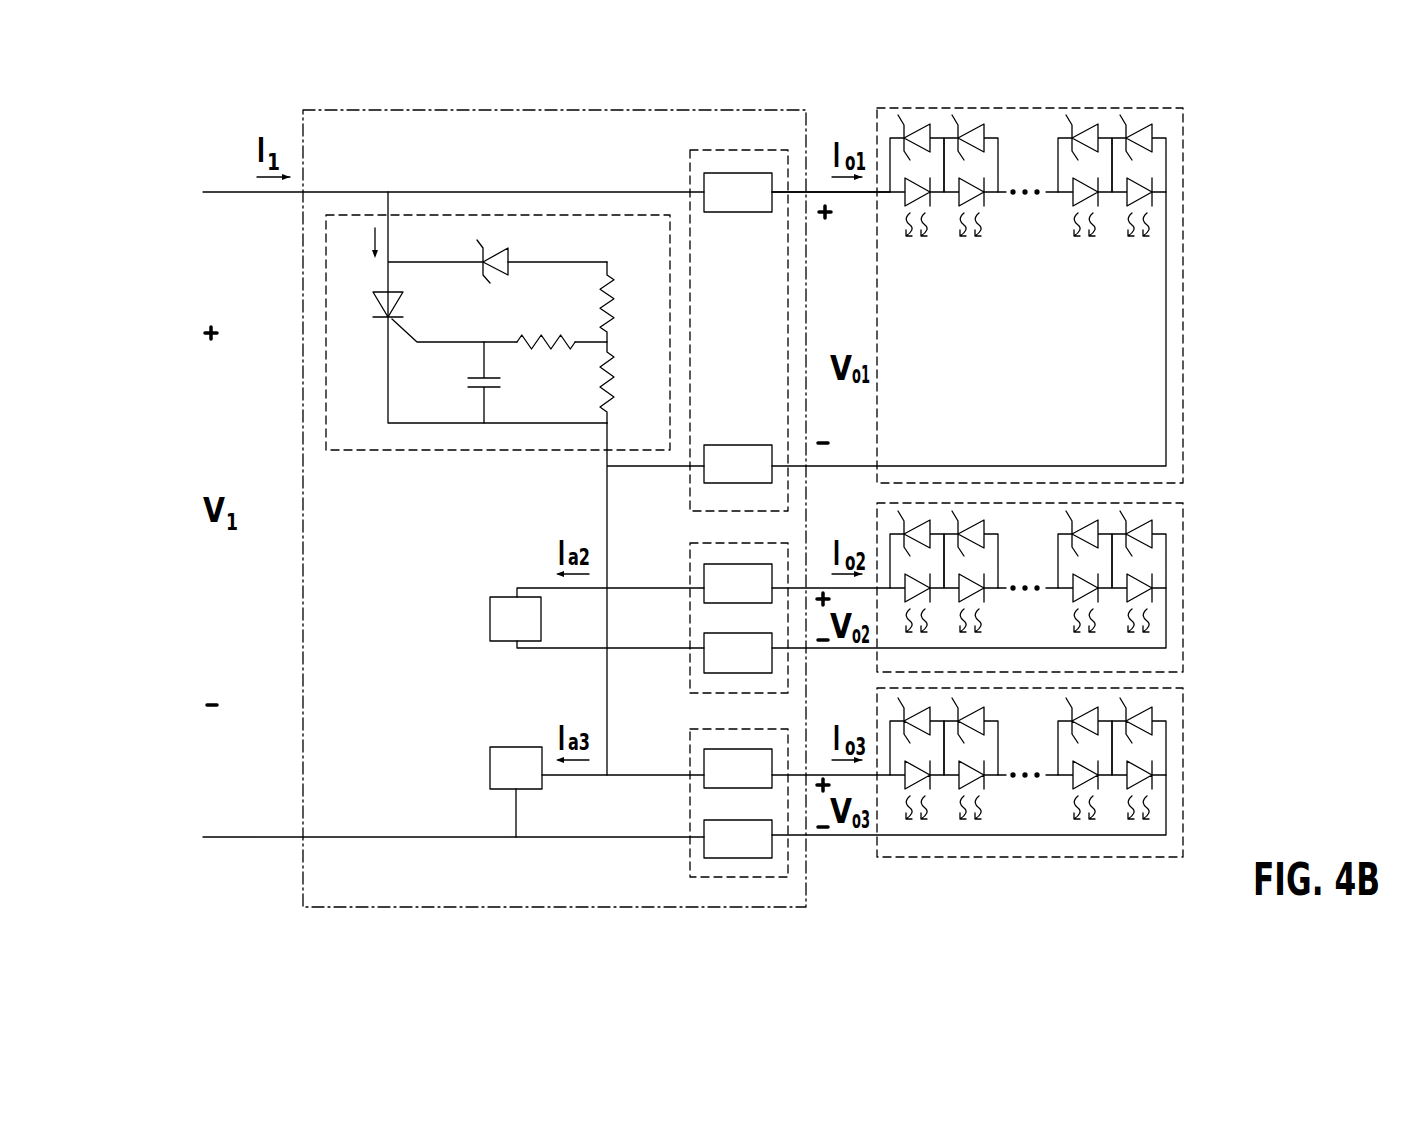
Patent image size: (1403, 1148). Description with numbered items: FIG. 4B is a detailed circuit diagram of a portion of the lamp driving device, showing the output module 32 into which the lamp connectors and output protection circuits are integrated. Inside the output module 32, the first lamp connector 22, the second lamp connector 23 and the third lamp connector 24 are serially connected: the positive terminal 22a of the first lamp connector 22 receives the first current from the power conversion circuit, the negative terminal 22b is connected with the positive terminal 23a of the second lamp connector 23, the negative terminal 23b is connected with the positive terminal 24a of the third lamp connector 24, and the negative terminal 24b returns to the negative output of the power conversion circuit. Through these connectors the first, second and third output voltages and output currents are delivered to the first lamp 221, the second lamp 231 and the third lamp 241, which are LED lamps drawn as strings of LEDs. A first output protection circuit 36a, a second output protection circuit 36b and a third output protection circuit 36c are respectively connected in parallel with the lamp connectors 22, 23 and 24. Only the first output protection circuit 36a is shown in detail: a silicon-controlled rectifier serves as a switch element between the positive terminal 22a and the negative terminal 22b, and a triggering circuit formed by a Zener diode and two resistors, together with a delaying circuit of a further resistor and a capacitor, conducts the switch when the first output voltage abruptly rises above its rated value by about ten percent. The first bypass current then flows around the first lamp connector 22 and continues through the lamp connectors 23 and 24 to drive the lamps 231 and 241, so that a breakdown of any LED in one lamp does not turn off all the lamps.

The first lamp connector 22 is at (689, 175).
The positive terminal 22a is at (738, 192).
The negative terminal 22b is at (738, 464).
The second lamp connector 23 is at (689, 668).
The positive terminal 23a is at (738, 583).
The negative terminal 23b is at (738, 653).
The third lamp connector 24 is at (689, 853).
The positive terminal 24a is at (738, 769).
The negative terminal 24b is at (738, 839).
The output module 32 is at (303, 863).
The first output protection circuit 36a is at (355, 450).
The second output protection circuit 36b is at (597, 618).
The third output protection circuit 36c is at (597, 792).
The first lamp 221 is at (1183, 286).
The second lamp 231 is at (1183, 588).
The third lamp 241 is at (1183, 773).